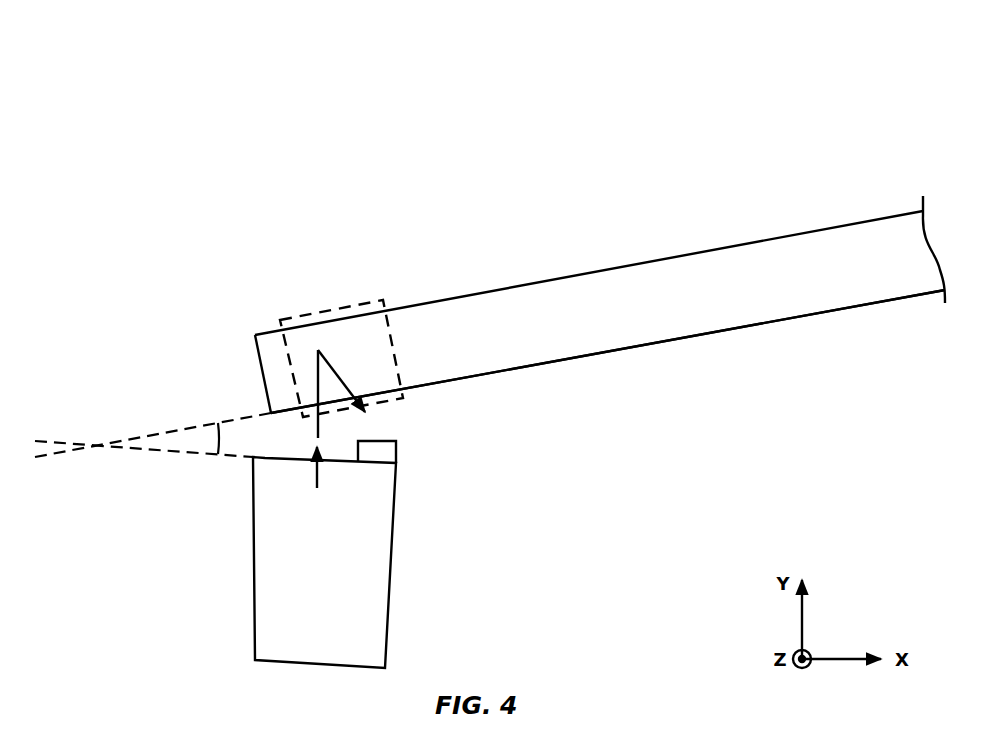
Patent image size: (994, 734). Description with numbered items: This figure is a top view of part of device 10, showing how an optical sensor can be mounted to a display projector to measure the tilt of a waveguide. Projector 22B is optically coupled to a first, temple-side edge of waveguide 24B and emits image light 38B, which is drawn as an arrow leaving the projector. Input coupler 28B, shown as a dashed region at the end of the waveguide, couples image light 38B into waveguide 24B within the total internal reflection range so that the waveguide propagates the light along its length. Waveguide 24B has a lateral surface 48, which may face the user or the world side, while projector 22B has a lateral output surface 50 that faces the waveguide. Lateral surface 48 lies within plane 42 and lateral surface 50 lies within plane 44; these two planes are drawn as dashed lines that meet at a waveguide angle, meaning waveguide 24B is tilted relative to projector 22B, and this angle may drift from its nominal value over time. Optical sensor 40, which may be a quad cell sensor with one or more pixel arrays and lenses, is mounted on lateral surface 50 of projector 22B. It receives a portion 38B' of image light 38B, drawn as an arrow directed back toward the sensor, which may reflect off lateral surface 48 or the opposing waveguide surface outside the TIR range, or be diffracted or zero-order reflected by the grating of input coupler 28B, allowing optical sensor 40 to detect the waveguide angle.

The device 10 is at (776, 71).
The projector 22B is at (387, 567).
The waveguide 24B is at (735, 252).
The input coupler 28B is at (335, 308).
The image light 38B is at (354, 472).
The portion of image light 38B' is at (382, 391).
The optical sensor 40 is at (393, 453).
The plane 42 is at (65, 453).
The plane 44 is at (62, 441).
The lateral surface 48 is at (614, 357).
The lateral surface 50 is at (278, 469).